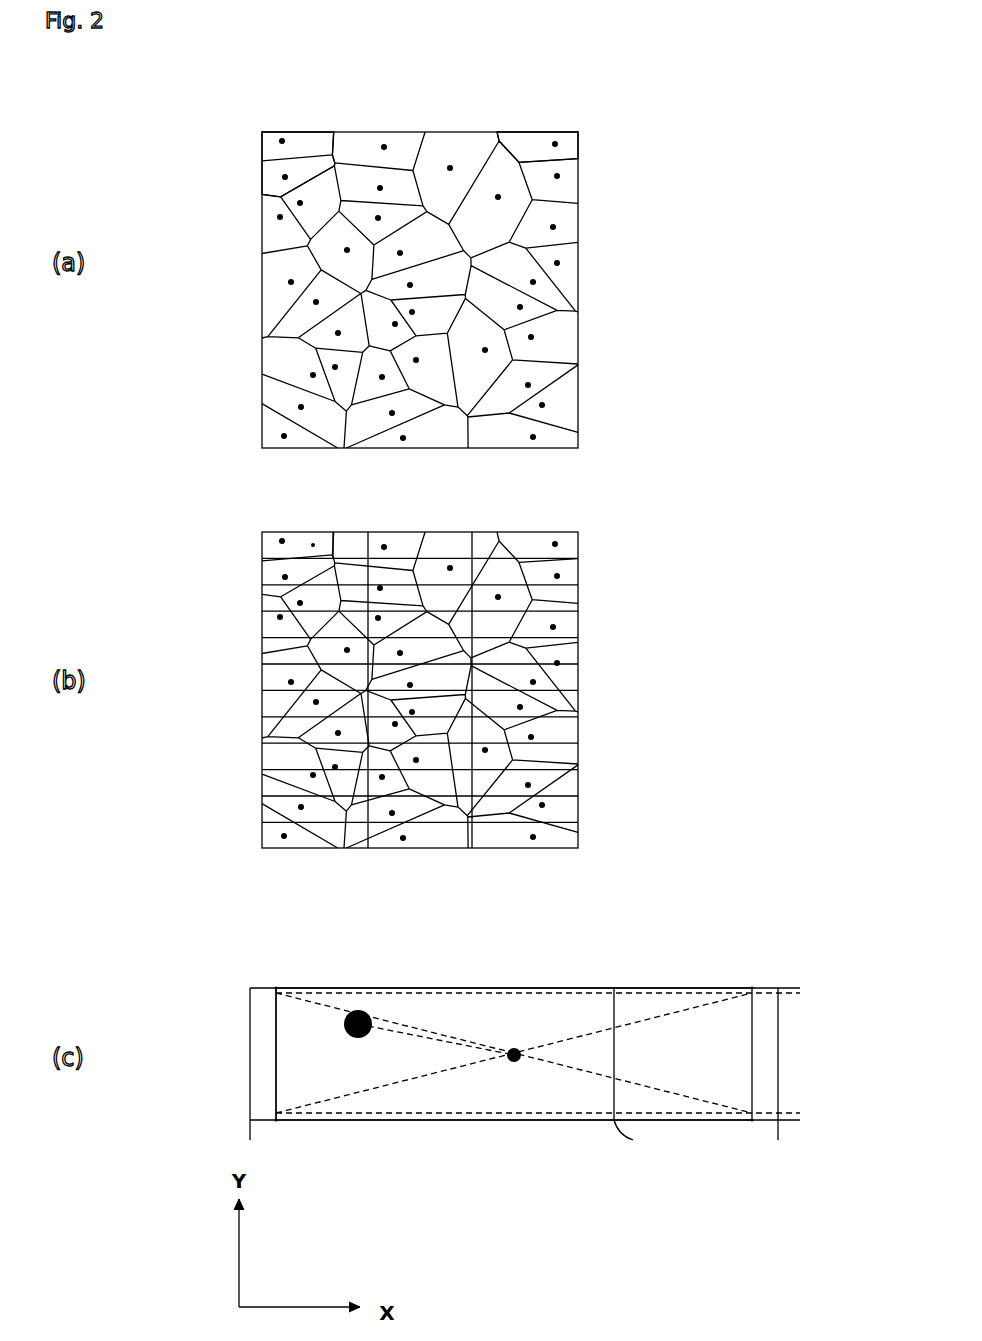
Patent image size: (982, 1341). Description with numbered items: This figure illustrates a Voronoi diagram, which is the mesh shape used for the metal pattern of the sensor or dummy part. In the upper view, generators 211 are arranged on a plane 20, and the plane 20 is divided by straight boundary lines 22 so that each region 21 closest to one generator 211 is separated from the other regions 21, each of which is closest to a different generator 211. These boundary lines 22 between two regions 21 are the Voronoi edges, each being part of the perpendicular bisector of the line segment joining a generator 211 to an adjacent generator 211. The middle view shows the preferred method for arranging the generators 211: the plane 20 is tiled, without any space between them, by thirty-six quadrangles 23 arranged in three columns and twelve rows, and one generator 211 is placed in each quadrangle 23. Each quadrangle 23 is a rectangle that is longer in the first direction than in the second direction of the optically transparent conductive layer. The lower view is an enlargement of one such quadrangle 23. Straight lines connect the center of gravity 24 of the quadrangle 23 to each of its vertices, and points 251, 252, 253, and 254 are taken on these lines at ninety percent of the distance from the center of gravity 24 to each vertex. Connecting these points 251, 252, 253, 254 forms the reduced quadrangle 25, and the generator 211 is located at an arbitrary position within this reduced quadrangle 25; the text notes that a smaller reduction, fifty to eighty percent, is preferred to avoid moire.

The plane 20 is at (588, 169).
The region 21 is at (556, 190).
The boundary line 22 is at (287, 250).
The generator 211 is at (540, 133).
The quadrangle 23 is at (258, 542).
The center of gravity 24 is at (305, 551).
The reduced quadrangle 25 is at (272, 1069).
The point 251 is at (754, 986).
The point 252 is at (755, 1122).
The point 253 is at (273, 1118).
The point 254 is at (277, 985).